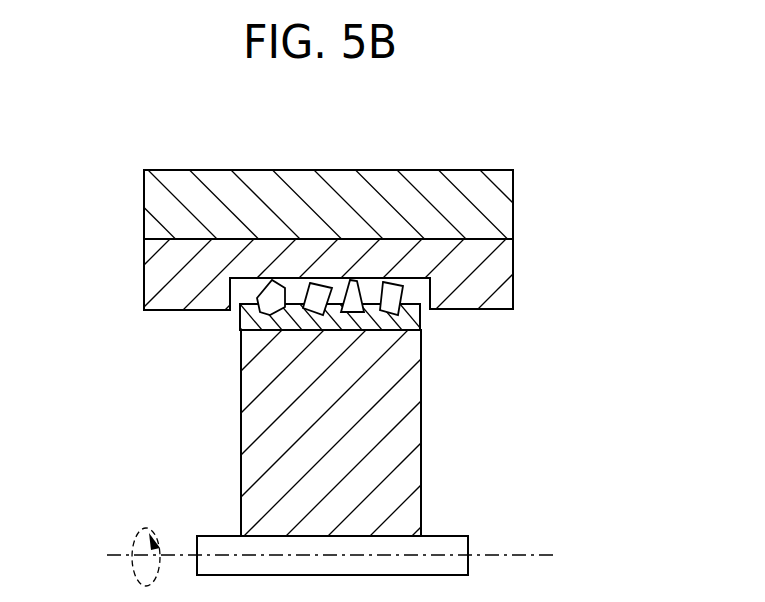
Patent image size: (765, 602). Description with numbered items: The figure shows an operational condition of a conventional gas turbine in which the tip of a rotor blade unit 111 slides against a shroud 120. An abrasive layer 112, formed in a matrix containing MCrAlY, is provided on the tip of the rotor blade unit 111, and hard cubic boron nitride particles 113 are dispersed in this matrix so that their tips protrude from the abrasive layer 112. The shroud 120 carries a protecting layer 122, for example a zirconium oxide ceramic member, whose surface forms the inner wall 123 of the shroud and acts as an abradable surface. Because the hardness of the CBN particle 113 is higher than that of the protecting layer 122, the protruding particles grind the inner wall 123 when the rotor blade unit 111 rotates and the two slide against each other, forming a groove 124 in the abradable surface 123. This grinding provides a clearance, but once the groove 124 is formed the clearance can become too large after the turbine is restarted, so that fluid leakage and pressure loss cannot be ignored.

The rotor blade unit 111 is at (242, 458).
The abrasive layer 112 is at (421, 322).
The CBN particle 113 is at (410, 290).
The shroud 120 is at (443, 170).
The protecting layer 122 is at (145, 268).
The inner wall 123 is at (187, 311).
The groove 124 is at (430, 276).